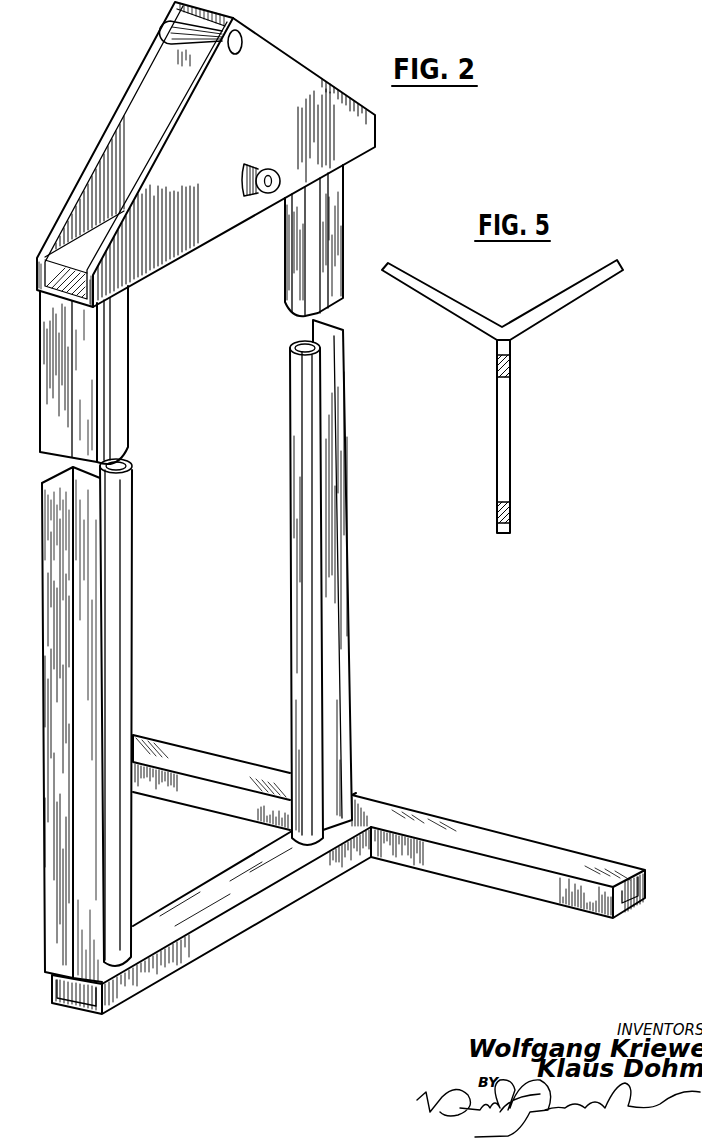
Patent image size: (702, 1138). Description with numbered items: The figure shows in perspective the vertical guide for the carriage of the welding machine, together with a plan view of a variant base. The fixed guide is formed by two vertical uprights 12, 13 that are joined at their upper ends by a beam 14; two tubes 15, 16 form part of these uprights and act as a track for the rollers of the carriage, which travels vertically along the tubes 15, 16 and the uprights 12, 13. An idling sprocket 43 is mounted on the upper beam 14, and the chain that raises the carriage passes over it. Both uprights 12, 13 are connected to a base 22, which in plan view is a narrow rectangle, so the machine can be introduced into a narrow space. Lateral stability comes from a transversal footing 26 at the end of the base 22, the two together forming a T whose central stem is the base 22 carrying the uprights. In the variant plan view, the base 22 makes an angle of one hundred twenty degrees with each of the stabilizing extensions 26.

In FIG. 2, the vertical upright 12 is at (97, 447).
In FIG. 5, the vertical upright 12 is at (510, 512).
In FIG. 2, the vertical upright 13 is at (333, 198).
In FIG. 5, the vertical upright 13 is at (512, 368).
In FIG. 2, the beam 14 is at (293, 72).
In FIG. 2, the tube 15 is at (128, 362).
In FIG. 2, the tube 16 is at (297, 266).
In FIG. 2, the base 22 is at (257, 913).
In FIG. 5, the base 22 is at (505, 422).
In FIG. 2, the transversal footing 26 is at (201, 764).
In FIG. 5, the transversal footing 26 is at (432, 293).
In FIG. 2, the idling sprocket 43 is at (266, 168).